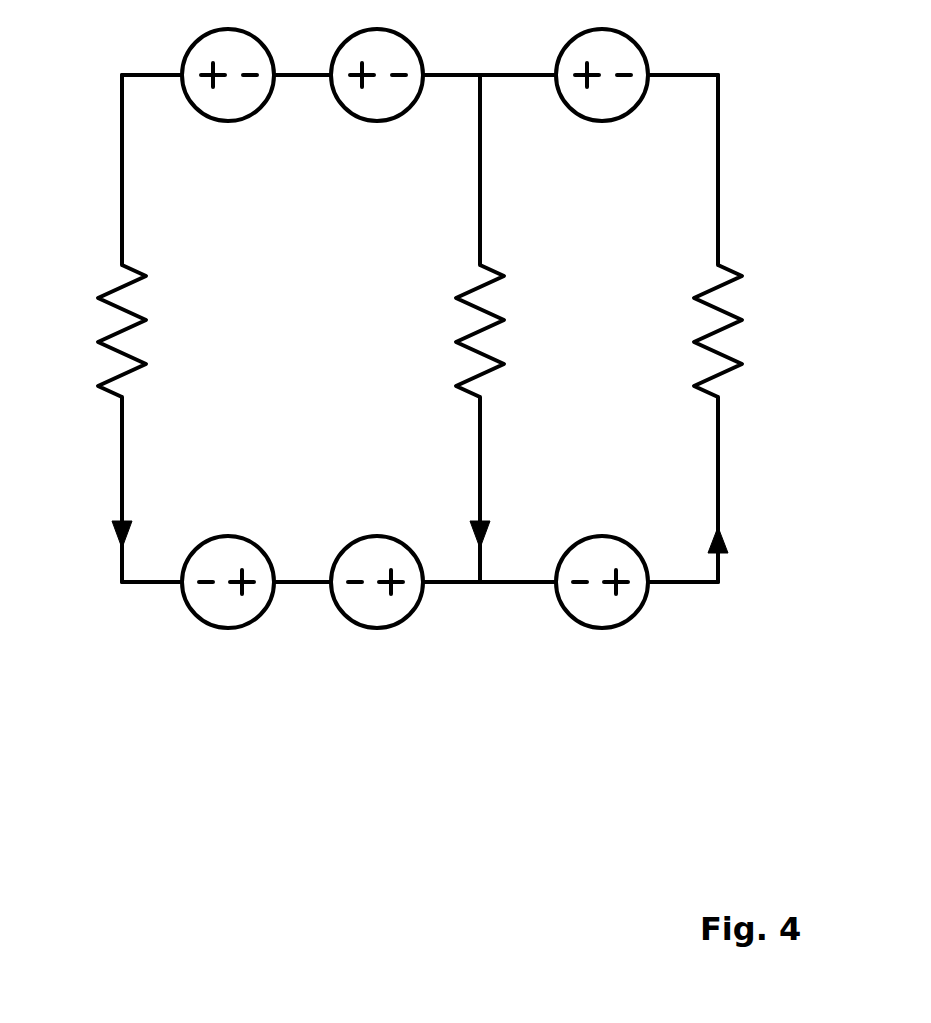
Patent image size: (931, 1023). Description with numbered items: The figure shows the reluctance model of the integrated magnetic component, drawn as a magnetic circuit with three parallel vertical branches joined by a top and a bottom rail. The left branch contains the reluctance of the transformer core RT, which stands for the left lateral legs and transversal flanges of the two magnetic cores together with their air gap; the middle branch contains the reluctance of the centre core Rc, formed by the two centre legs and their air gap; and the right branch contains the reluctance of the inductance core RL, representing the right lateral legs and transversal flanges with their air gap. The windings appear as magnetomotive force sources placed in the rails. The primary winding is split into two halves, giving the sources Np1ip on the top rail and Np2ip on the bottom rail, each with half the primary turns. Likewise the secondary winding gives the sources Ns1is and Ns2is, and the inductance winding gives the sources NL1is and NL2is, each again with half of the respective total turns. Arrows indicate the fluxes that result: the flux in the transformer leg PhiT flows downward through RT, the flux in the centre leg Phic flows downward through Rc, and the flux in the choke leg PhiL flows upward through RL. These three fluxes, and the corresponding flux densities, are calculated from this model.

The reluctance of transformer core RT is at (89, 339).
The reluctance of the centre core Rc is at (509, 340).
The reluctance of the inductance core RL is at (748, 340).
The primary winding magnetomotive force source Np1ip is at (231, 108).
The secondary winding magnetomotive force source Ns1is is at (378, 108).
The inductance winding magnetomotive force source NL1is is at (602, 108).
The primary winding magnetomotive force source Np2ip is at (230, 551).
The secondary winding magnetomotive force source Ns2is is at (378, 551).
The inductance winding magnetomotive force source NL2is is at (602, 549).
The flux in transformer leg PhiT is at (97, 538).
The flux in centre leg Phic is at (510, 521).
The flux in choke leg PhiL is at (748, 538).